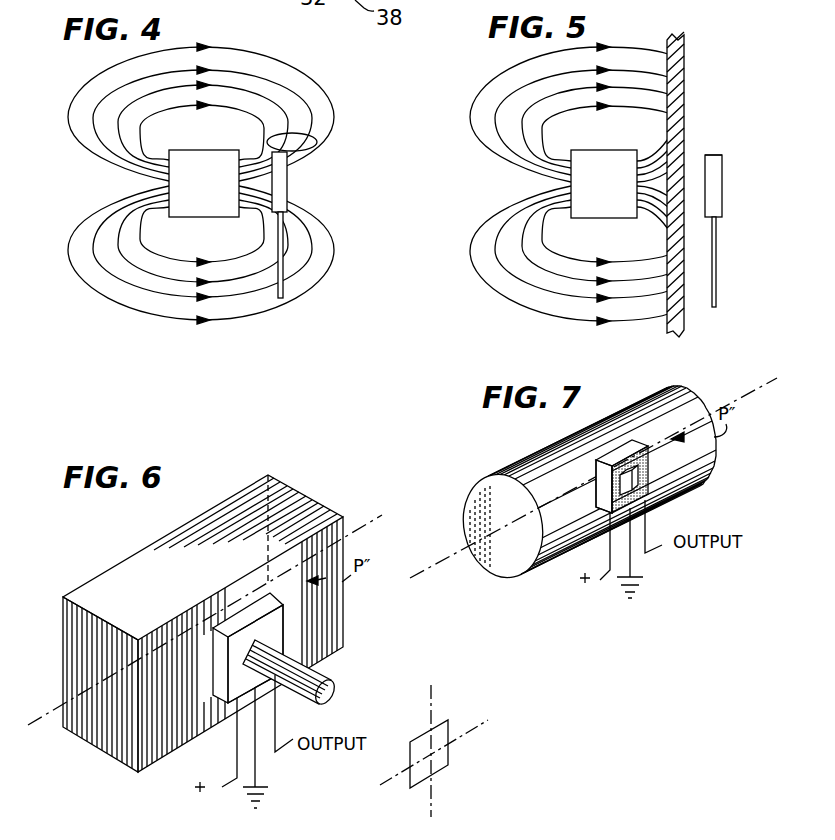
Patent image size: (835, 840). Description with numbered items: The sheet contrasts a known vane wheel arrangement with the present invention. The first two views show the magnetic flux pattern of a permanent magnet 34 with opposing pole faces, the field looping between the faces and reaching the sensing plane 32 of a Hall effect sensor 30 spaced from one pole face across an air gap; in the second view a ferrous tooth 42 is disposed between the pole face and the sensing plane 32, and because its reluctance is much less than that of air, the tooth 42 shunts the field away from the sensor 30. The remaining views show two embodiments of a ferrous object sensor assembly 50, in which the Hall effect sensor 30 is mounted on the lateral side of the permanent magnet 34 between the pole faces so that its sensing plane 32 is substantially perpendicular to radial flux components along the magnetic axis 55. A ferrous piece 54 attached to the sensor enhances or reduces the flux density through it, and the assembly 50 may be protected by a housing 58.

In FIG. 4, the Hall effect sensor 30 is at (290, 188).
In FIG. 5, the Hall effect sensor 30 is at (725, 186).
In FIG. 6, the Hall effect sensor 30 is at (220, 704).
In FIG. 7, the Hall effect sensor 30 is at (621, 468).
In FIG. 4, the sensing plane 32 is at (315, 148).
In FIG. 5, the sensing plane 32 is at (720, 156).
In FIG. 6, the sensing plane 32 is at (247, 633).
In FIG. 7, the sensing plane 32 is at (598, 456).
In FIG. 4, the permanent magnet 34 is at (166, 180).
In FIG. 5, the permanent magnet 34 is at (568, 183).
In FIG. 6, the permanent magnet 34 is at (106, 752).
In FIG. 7, the permanent magnet 34 is at (556, 557).
In FIG. 5, the tooth 42 is at (676, 69).
In FIG. 6, the ferrous object sensor assembly 50 is at (176, 531).
In FIG. 7, the ferrous object sensor assembly 50 is at (519, 444).
In FIG. 6, the ferrous piece 54 is at (326, 684).
In FIG. 7, the ferrous piece 54 is at (645, 503).
In FIG. 6, the magnetic axis 55 is at (376, 513).
In FIG. 7, the magnetic axis 55 is at (452, 562).
In FIG. 7, the housing 58 is at (630, 443).